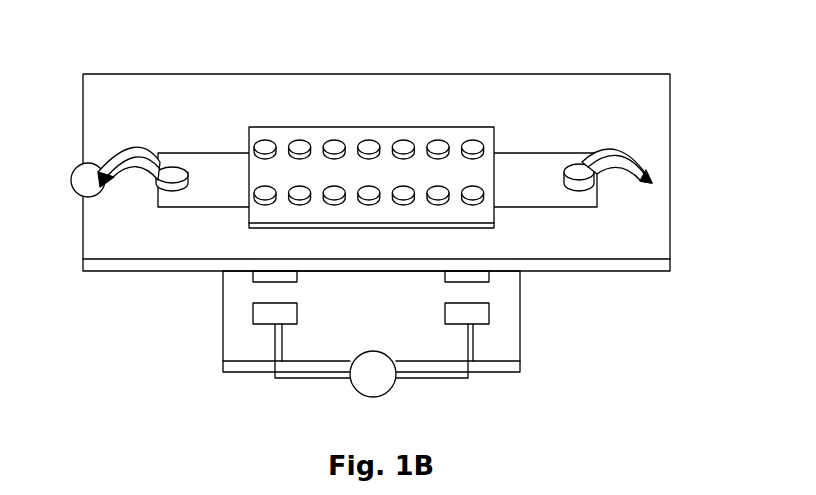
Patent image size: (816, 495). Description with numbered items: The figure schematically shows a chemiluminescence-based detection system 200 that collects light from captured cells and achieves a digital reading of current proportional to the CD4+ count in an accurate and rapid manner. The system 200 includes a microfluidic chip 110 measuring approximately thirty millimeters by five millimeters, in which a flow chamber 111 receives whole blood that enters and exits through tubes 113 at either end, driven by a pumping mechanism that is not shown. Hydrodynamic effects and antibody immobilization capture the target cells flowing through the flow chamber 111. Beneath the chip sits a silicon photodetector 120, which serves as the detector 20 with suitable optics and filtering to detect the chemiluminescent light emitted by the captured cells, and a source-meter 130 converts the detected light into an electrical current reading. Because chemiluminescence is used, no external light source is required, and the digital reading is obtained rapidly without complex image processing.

The detector 20 is at (338, 335).
The microfluidic chip 110 is at (387, 166).
The flow chamber 111 is at (406, 132).
The tubes 113 is at (107, 140).
The silicon photodetector 120 is at (369, 335).
The source-meter 130 is at (379, 340).
The chemiluminescence-based detection system 200 is at (387, 225).